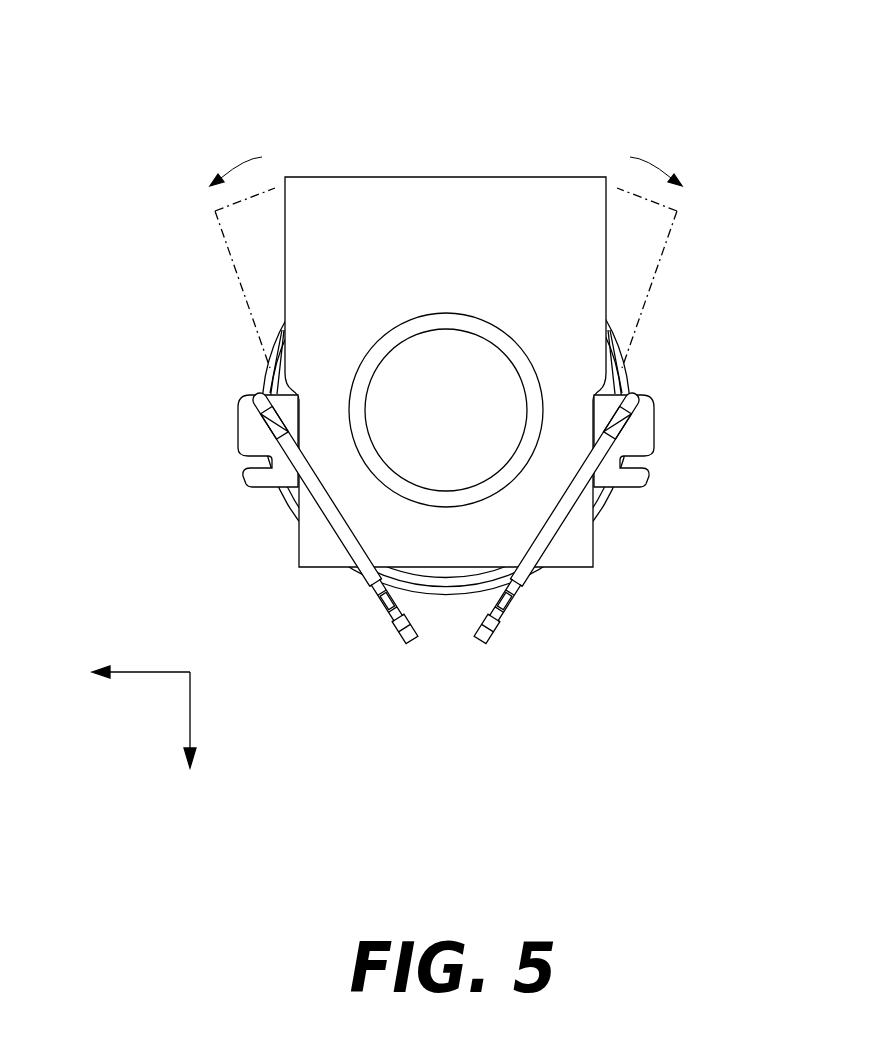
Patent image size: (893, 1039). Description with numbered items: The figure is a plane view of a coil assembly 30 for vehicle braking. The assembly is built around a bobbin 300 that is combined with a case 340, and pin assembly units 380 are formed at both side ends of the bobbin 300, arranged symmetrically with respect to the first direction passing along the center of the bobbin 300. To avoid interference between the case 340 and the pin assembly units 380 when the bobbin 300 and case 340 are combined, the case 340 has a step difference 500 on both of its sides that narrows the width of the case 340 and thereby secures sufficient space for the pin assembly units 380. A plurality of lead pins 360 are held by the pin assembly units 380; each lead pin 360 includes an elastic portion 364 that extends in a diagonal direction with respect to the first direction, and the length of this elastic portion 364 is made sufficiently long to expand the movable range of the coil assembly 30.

The coil assembly 30 is at (286, 44).
The case 340 is at (560, 184).
The bobbin 300 is at (612, 364).
The step difference 500 is at (290, 384).
The pin assembly unit 380 is at (243, 441).
The elastic portion 364 is at (370, 583).
The lead pin 360 is at (474, 644).